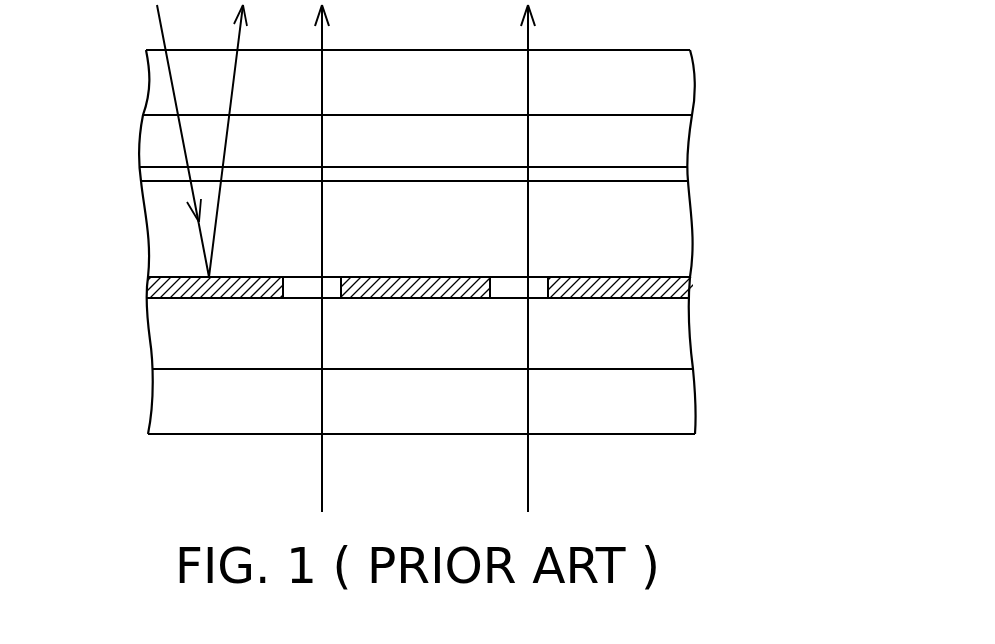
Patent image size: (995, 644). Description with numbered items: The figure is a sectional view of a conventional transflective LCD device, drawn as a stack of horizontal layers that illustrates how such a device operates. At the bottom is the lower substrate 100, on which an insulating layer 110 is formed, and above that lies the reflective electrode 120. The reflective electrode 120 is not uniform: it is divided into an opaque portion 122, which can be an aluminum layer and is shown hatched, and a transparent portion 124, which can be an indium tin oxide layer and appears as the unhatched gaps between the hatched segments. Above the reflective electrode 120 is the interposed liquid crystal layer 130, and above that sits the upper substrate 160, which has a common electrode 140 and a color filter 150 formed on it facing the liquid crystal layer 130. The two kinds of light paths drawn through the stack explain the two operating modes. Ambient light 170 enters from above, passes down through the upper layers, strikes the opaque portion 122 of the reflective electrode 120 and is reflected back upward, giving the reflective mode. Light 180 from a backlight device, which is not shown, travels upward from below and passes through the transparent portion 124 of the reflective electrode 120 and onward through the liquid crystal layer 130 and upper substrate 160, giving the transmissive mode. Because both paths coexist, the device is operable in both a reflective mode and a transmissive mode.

The lower substrate 100 is at (684, 410).
The insulating layer 110 is at (684, 343).
The reflective electrode 120 is at (684, 288).
The opaque portion 122 is at (241, 314).
The transparent portion 124 is at (304, 315).
The liquid crystal layer 130 is at (684, 217).
The common electrode 140 is at (676, 176).
The color filter 150 is at (676, 145).
The upper substrate 160 is at (684, 80).
The ambient light 170 is at (163, 30).
The light from a backlight device 180 is at (323, 463).